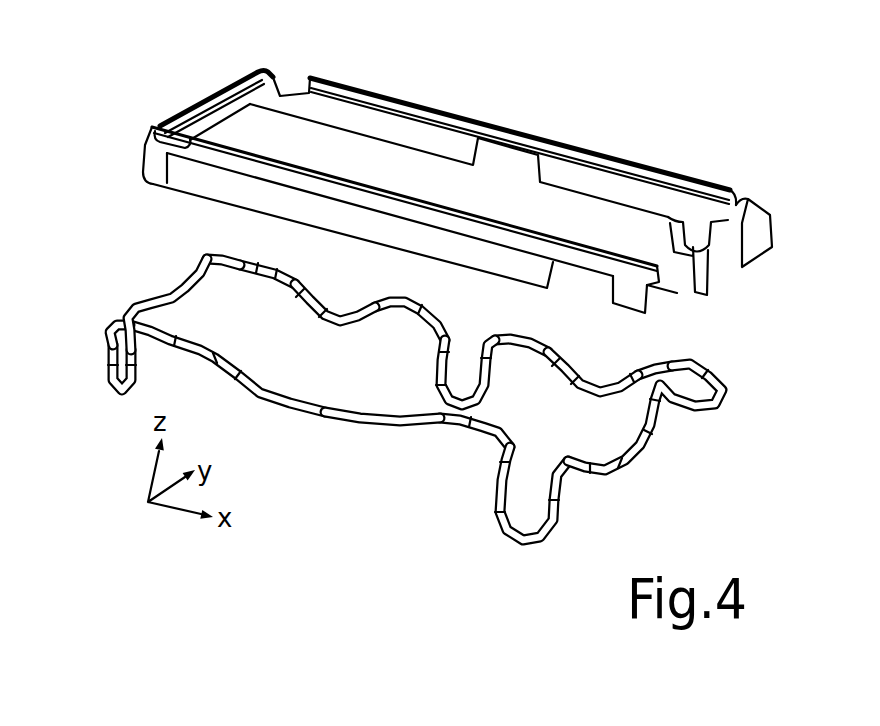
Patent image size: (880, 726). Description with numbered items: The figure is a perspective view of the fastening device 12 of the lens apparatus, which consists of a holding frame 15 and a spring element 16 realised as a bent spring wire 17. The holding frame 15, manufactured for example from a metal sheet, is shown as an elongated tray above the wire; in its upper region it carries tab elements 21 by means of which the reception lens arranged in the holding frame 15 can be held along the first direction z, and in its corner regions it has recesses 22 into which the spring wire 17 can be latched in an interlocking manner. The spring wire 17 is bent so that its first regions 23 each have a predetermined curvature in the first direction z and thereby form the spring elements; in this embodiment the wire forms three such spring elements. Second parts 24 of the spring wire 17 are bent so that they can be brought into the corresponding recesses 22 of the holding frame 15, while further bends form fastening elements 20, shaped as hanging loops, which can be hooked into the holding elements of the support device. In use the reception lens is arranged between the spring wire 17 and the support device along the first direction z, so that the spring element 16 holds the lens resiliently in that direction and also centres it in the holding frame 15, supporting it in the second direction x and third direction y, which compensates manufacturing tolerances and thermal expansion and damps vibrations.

The fastening device 12 is at (137, 86).
The holding frame 15 is at (680, 205).
The spring element 16 is at (353, 322).
The spring wire 17 is at (633, 467).
The fastening elements 20 is at (462, 378).
The tab elements 21 is at (208, 100).
The recesses 22 is at (293, 73).
The first regions 23 is at (334, 298).
The second parts 24 is at (191, 246).